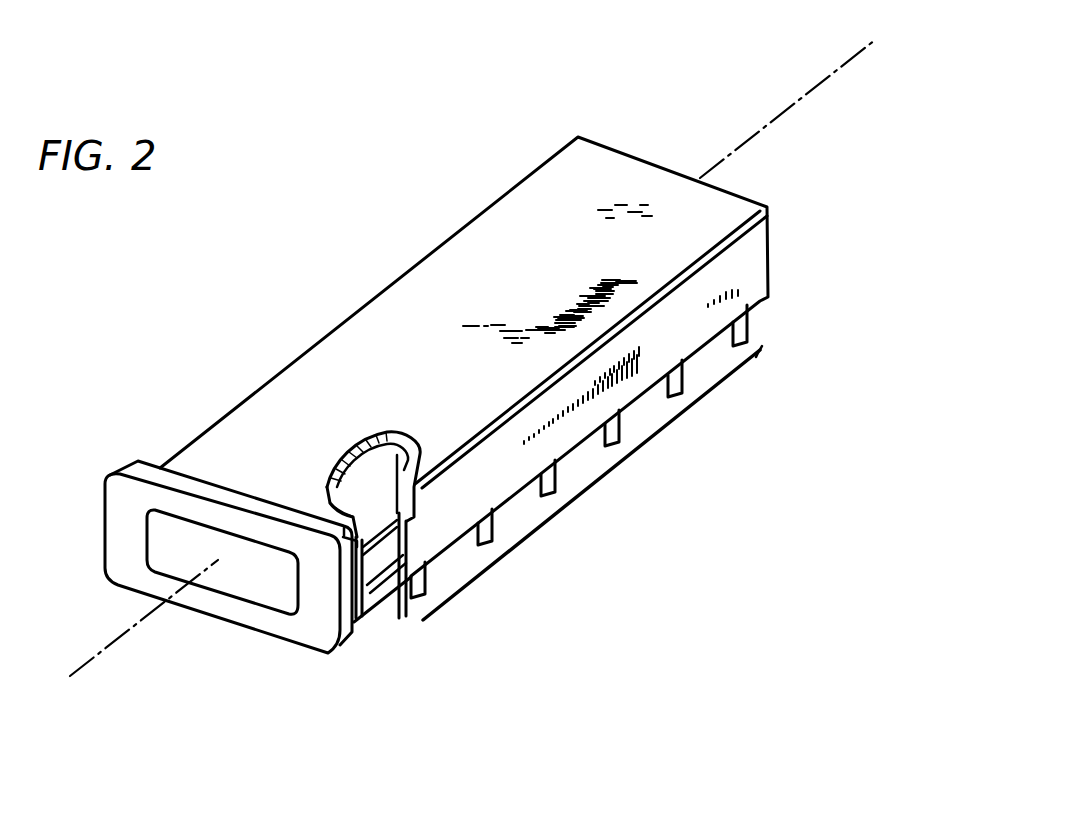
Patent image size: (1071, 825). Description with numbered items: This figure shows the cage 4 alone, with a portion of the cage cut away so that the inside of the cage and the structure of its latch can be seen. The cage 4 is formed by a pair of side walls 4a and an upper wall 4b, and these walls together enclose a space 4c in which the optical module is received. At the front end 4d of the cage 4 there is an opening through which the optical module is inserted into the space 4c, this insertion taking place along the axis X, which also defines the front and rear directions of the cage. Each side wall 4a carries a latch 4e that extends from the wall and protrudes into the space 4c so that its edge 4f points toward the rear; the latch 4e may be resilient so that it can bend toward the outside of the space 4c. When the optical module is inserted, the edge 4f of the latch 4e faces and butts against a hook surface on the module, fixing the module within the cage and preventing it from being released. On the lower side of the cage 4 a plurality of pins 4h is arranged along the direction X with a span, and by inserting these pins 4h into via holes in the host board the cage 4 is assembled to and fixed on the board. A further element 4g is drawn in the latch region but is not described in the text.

The cage 4 is at (805, 194).
The side wall 4a is at (480, 216).
The upper wall 4b is at (649, 190).
The space 4c is at (398, 474).
The front end 4d is at (293, 630).
The latch 4e is at (337, 500).
The edge 4f is at (399, 600).
The latch lugs 4g is at (383, 517).
The pins 4h is at (592, 483).
The axis X is at (810, 90).